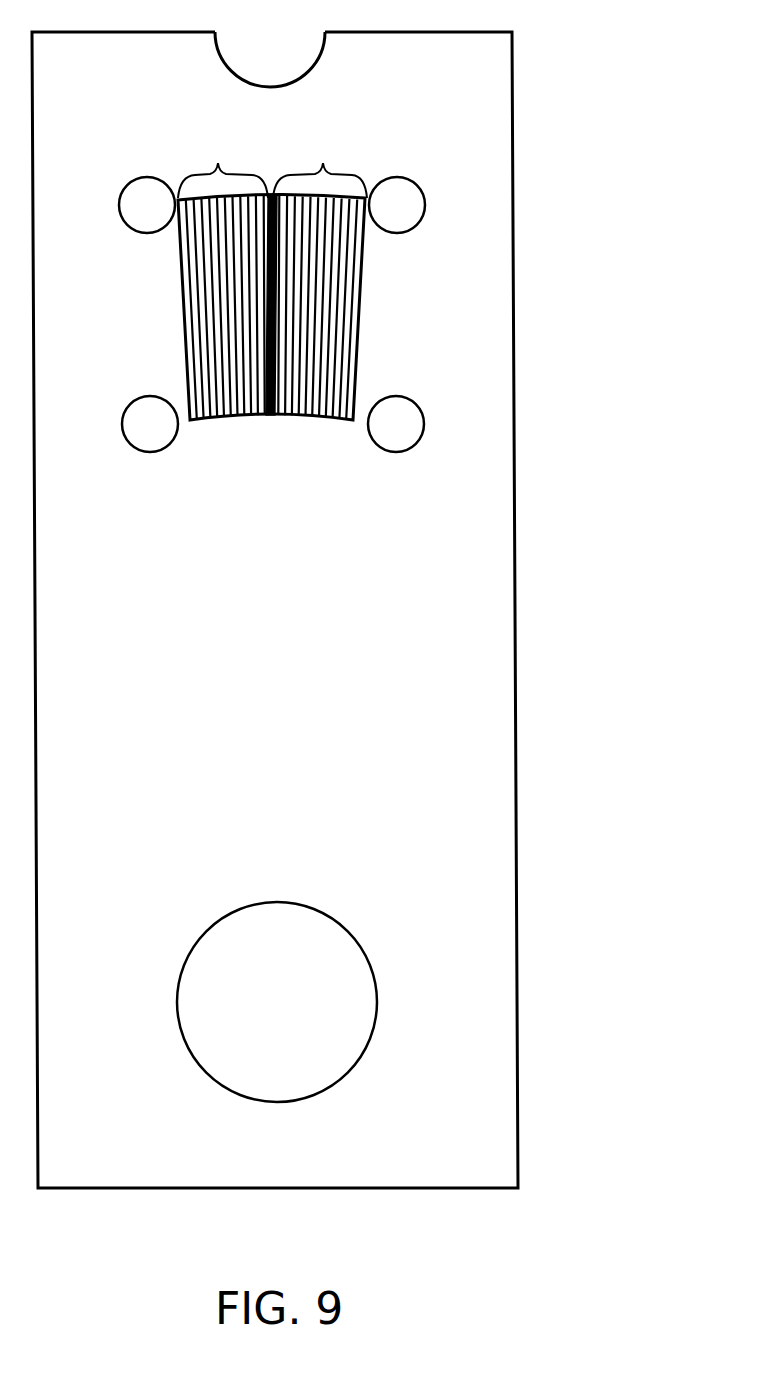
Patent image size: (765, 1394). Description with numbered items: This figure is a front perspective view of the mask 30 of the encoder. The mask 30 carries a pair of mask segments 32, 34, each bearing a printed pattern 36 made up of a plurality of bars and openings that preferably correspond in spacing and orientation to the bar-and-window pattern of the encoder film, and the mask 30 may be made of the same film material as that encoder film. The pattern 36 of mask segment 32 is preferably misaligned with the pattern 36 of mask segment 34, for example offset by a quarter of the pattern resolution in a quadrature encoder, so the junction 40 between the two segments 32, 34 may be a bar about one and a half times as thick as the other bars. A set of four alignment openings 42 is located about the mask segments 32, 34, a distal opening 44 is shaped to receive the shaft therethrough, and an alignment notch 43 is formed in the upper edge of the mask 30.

The mask 30 is at (342, 601).
The mask segment 32 is at (223, 163).
The mask segment 34 is at (320, 163).
The printed pattern 36 is at (216, 305).
The junction 40 is at (270, 198).
The alignment openings 42 is at (142, 190).
The alignment notch 43 is at (300, 76).
The distal opening 44 is at (277, 1002).